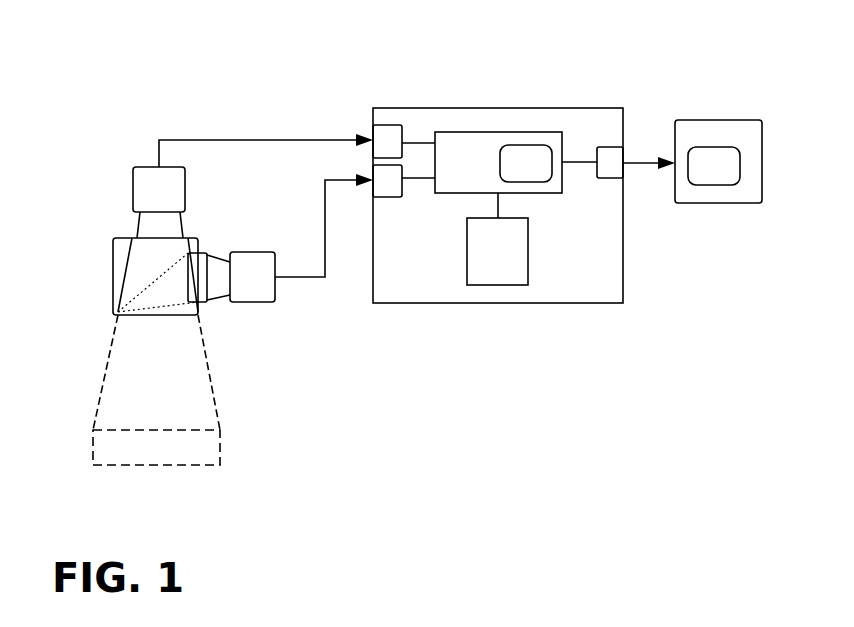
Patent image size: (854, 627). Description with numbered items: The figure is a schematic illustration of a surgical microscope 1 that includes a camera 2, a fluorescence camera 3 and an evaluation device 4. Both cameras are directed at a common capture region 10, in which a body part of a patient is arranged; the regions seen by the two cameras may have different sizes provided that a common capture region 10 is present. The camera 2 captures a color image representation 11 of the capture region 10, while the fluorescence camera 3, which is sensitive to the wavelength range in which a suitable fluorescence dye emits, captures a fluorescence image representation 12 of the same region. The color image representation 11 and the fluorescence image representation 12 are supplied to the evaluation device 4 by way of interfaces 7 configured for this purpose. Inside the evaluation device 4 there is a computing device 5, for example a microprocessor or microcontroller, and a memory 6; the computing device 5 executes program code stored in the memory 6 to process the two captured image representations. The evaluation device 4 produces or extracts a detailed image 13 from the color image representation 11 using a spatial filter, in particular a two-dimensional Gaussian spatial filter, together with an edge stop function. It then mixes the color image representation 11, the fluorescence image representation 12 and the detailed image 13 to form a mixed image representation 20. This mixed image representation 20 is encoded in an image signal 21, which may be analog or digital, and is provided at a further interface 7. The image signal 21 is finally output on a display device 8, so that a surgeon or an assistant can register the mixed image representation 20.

The surgical microscope 1 is at (122, 50).
The camera 2 is at (150, 167).
The fluorescence camera 3 is at (253, 250).
The evaluation device 4 is at (418, 107).
The computing device 5 is at (488, 132).
The memory 6 is at (500, 287).
The interfaces 7 is at (386, 124).
The display device 8 is at (703, 120).
The capture region 10 is at (168, 467).
The color image representation 11 is at (273, 137).
The fluorescence image representation 12 is at (293, 280).
The detailed image 13 is at (537, 145).
The mixed image representation 20 is at (723, 147).
The image signal 21 is at (647, 158).